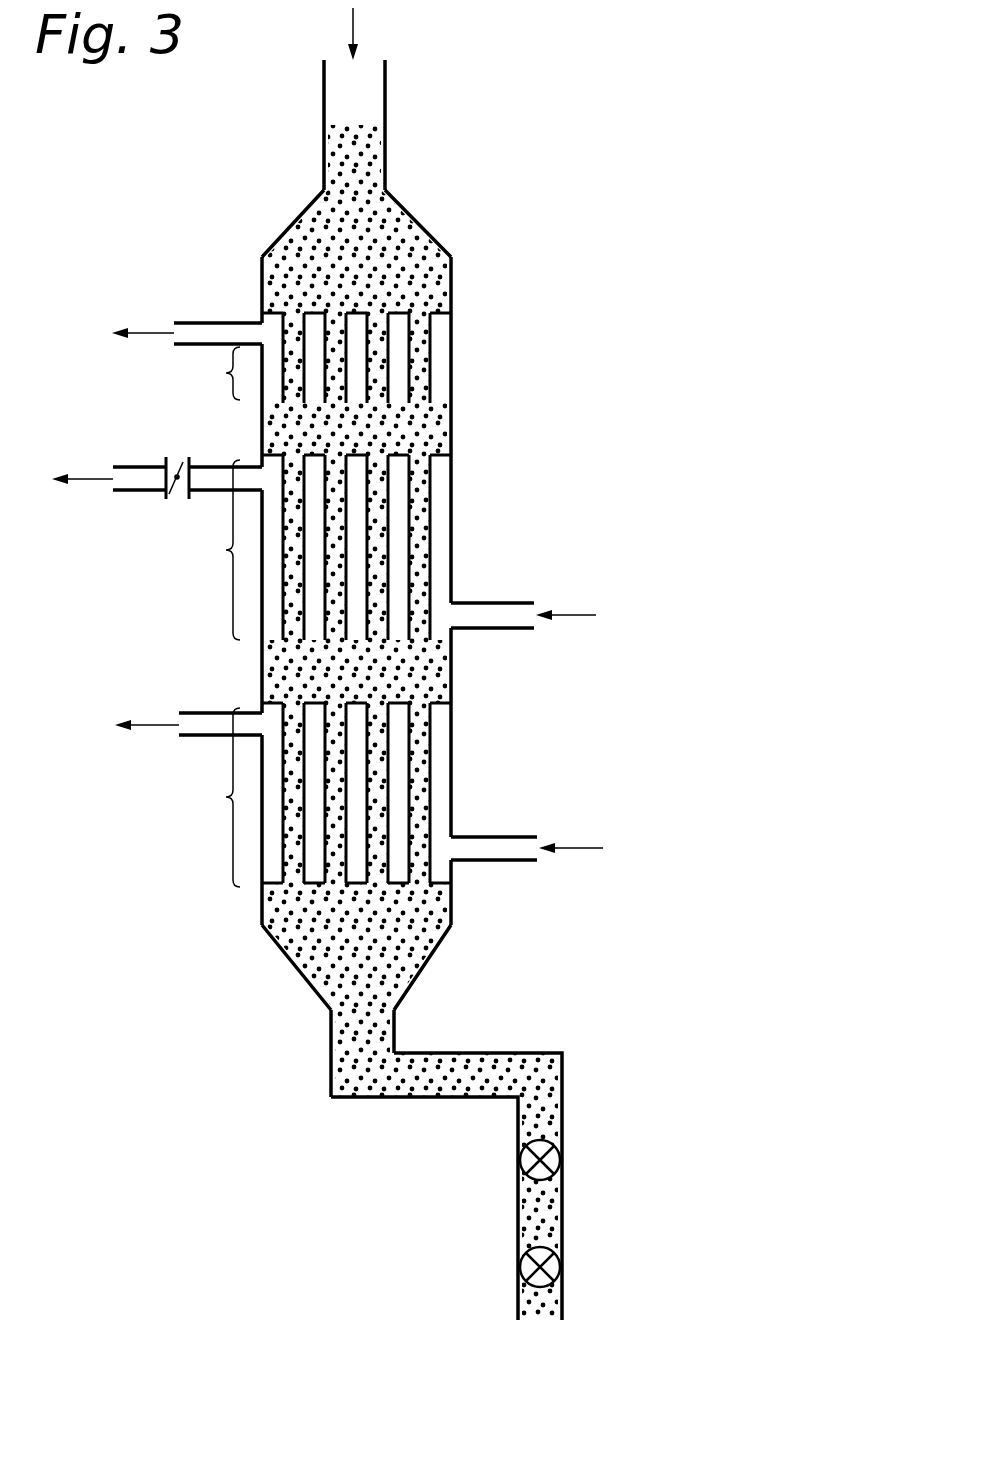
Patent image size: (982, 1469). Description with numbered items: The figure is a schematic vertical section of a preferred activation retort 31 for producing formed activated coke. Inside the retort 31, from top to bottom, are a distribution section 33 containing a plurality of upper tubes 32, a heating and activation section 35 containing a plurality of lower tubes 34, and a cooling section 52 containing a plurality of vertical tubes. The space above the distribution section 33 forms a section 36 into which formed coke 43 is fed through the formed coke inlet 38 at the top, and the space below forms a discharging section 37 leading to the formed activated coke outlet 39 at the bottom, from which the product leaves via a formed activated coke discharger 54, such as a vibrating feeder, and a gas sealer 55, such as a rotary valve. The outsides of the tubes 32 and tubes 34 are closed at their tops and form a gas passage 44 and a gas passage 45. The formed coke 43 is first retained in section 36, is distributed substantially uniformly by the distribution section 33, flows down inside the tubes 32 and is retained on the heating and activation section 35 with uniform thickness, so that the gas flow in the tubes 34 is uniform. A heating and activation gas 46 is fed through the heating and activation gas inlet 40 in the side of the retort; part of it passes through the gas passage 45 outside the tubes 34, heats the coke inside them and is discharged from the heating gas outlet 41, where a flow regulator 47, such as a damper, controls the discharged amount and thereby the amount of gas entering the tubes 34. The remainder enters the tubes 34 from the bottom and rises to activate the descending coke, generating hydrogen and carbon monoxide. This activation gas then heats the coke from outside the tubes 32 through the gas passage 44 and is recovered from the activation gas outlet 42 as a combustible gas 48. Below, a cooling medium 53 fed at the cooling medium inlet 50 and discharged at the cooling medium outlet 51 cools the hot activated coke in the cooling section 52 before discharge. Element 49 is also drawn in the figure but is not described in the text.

The retort 31 is at (451, 252).
The upper tubes 32 is at (428, 352).
The distribution section 33 is at (211, 373).
The lower tubes 34 is at (432, 470).
The heating and activation section 35 is at (211, 550).
The section into which formed coke is fed 36 is at (355, 228).
The formed activated coke-discharging section 37 is at (365, 965).
The formed coke inlet 38 is at (353, 90).
The formed activated coke outlet 39 is at (355, 1040).
The heating and activation gas inlet 40 is at (492, 616).
The heating gas outlet 41 is at (213, 476).
The activation gas outlet 42 is at (214, 330).
The formed coke 43 is at (371, 30).
The gas passage 44 is at (432, 377).
The gas passage 45 is at (432, 560).
The heating and activation gas 46 is at (588, 616).
The flow regulator 47 is at (176, 490).
The combustible gas 48 is at (123, 334).
The third heat exchange tubes 49 is at (436, 762).
The cooling medium inlet 50 is at (500, 845).
The cooling medium outlet 51 is at (220, 720).
The cooling section 52 is at (211, 797).
The cooling medium 53 is at (592, 848).
The formed activated coke discharger 54 is at (460, 1075).
The gas sealer 55 is at (563, 1254).